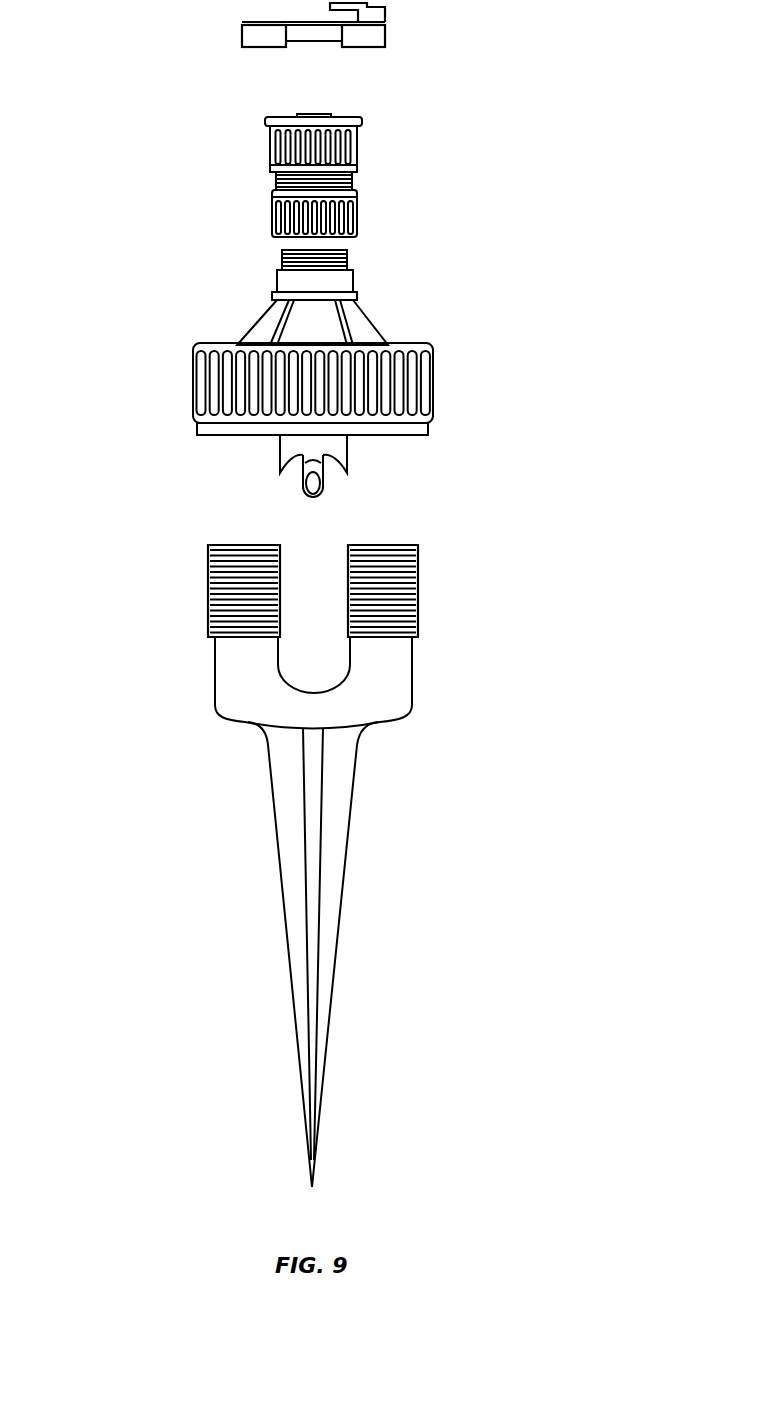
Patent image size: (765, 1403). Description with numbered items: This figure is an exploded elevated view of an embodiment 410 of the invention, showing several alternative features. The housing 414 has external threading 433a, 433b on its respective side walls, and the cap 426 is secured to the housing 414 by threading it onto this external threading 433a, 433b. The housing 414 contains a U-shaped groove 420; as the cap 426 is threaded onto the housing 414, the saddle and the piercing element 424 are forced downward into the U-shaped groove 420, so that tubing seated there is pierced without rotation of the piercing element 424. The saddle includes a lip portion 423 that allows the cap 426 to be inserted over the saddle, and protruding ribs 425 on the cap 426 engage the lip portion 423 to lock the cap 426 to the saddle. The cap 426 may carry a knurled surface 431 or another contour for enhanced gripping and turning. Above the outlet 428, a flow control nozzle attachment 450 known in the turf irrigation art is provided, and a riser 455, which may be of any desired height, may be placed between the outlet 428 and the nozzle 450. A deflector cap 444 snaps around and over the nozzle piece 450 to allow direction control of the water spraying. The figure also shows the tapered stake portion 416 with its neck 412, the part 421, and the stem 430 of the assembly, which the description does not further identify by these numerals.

The embodiment 410 is at (152, 442).
The neck 412 is at (264, 730).
The housing 414 is at (224, 682).
The spike 416 is at (348, 860).
The U-shaped groove 420 is at (323, 690).
The threaded portion 421 is at (352, 272).
The lip portion 423 is at (356, 300).
The piercing element 424 is at (325, 496).
The protruding ribs 425 is at (302, 328).
The cap 426 is at (410, 345).
The outlet 428 is at (282, 266).
The stem 430 is at (348, 452).
The knurled surface 431 is at (433, 392).
The external threading 433a is at (210, 588).
The external threading 433b is at (416, 588).
The deflector cap 444 is at (385, 36).
The flow control nozzle attachment 450 is at (362, 146).
The riser 455 is at (358, 220).